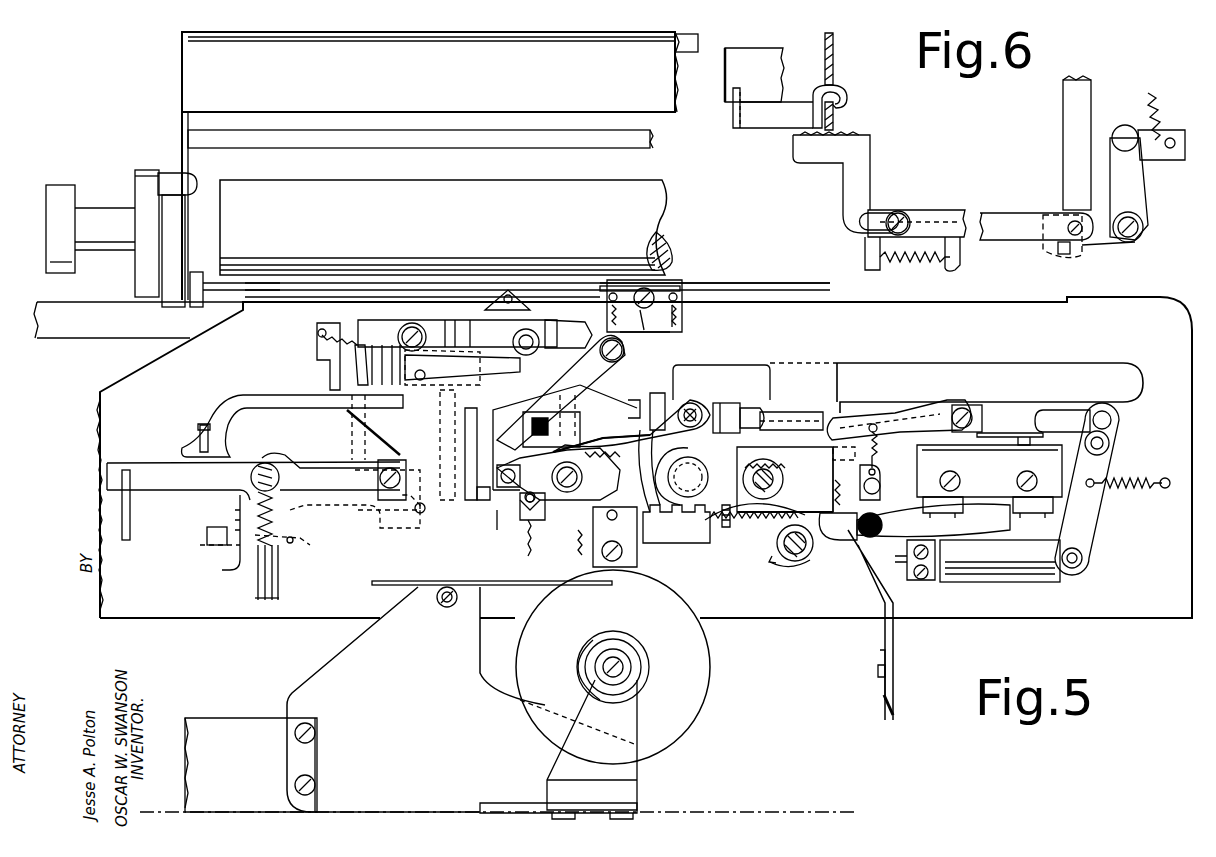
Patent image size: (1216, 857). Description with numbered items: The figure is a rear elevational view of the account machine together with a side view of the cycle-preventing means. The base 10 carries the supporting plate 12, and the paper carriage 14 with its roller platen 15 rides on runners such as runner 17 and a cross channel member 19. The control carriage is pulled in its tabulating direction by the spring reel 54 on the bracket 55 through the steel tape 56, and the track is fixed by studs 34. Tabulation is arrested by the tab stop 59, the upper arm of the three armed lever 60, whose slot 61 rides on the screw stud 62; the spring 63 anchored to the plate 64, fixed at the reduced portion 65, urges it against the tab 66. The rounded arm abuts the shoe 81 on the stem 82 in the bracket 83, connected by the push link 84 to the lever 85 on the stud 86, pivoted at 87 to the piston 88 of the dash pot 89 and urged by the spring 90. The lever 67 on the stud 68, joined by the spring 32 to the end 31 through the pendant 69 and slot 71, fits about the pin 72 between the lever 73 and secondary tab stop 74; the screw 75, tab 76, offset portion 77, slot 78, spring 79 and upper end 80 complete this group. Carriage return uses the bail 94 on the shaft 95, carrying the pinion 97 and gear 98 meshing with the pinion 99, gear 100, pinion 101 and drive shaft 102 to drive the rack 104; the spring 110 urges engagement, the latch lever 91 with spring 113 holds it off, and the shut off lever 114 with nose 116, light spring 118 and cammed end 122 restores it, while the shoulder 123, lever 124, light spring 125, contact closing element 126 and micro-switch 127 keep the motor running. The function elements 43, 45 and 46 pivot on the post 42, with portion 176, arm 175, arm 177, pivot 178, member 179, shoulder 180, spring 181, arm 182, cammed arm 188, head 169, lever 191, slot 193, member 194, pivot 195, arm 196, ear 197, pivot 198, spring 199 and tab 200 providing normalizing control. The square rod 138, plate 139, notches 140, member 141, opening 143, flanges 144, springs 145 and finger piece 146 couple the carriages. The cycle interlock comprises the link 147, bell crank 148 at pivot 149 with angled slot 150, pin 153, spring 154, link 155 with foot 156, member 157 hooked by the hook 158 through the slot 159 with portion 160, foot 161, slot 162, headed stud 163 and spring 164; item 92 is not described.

In FIG. 5, the base 10 is at (742, 810).
In FIG. 5, the supporting plate 12 is at (185, 614).
In FIG. 6, the supporting plate 12 is at (836, 74).
In FIG. 5, the paper carriage 14 is at (180, 97).
In FIG. 5, the roller platen 15 is at (460, 180).
In FIG. 5, the runner 17 is at (87, 340).
In FIG. 5, the cross channel member 19 is at (290, 305).
In FIG. 5, the end of lever 31 is at (275, 565).
In FIG. 5, the spring 32 is at (278, 477).
In FIG. 5, the studs 34 is at (446, 606).
In FIG. 5, the pivot post 42 is at (402, 336).
In FIG. 5, the paper feed bail 43 is at (337, 328).
In FIG. 5, the non-add bail 45 is at (479, 333).
In FIG. 5, the subtraction control element 46 is at (515, 340).
In FIG. 5, the spring reel 54 is at (697, 712).
In FIG. 5, the bracket 55 is at (637, 770).
In FIG. 5, the steel tape 56 is at (408, 580).
In FIG. 5, the tab stop 59 is at (584, 409).
In FIG. 5, the three armed lever 60 is at (612, 400).
In FIG. 5, the slot 61 is at (631, 426).
In FIG. 5, the screw stud 62 is at (660, 400).
In FIG. 5, the spring 63 is at (601, 437).
In FIG. 5, the plate 64 is at (608, 396).
In FIG. 5, the reduced portion of post 65 is at (533, 422).
In FIG. 5, the tab 66 is at (635, 398).
In FIG. 5, the lever 67 is at (315, 460).
In FIG. 5, the stud 68 is at (378, 478).
In FIG. 5, the pendant 69 is at (276, 510).
In FIG. 5, the open ended slot 71 is at (255, 600).
In FIG. 5, the pin 72 is at (493, 505).
In FIG. 5, the lever 73 is at (558, 482).
In FIG. 5, the secondary tab stop 74 is at (492, 440).
In FIG. 5, the screw 75 is at (590, 484).
In FIG. 5, the tab 76 is at (573, 480).
In FIG. 5, the offset portion 77 is at (644, 475).
In FIG. 5, the open ended slot 78 is at (512, 467).
In FIG. 5, the spring 79 is at (526, 545).
In FIG. 5, the upper end 80 is at (545, 395).
In FIG. 5, the shoe 81 is at (690, 403).
In FIG. 5, the stem 82 is at (760, 406).
In FIG. 5, the bracket 83 is at (738, 404).
In FIG. 5, the push link 84 is at (800, 405).
In FIG. 5, the lever 85 is at (1098, 510).
In FIG. 5, the stud 86 is at (1091, 472).
In FIG. 5, the pivotal connection 87 is at (1073, 568).
In FIG. 5, the piston 88 is at (1072, 548).
In FIG. 5, the dash pot 89 is at (1040, 540).
In FIG. 5, the spring 90 is at (1165, 476).
In FIG. 5, the latch lever 91 is at (607, 518).
In FIG. 5, the block 92 is at (593, 552).
In FIG. 6, the bail 94 is at (785, 58).
In FIG. 5, the shaft 95 is at (785, 499).
In FIG. 5, the carriage return pinion 97 is at (715, 478).
In FIG. 5, the pinion driving gear 98 is at (764, 473).
In FIG. 5, the pinion 99 is at (785, 479).
In FIG. 5, the gear 100 is at (745, 530).
In FIG. 5, the pinion 101 is at (784, 546).
In FIG. 5, the drive shaft 102 is at (786, 573).
In FIG. 5, the carriage return rack 104 is at (680, 543).
In FIG. 5, the spring 110 is at (724, 530).
In FIG. 5, the spring 113 is at (576, 532).
In FIG. 5, the shut off lever 114 is at (832, 410).
In FIG. 5, the nose 116 is at (822, 479).
In FIG. 5, the light spring 118 is at (861, 480).
In FIG. 5, the cammed end 122 is at (721, 382).
In FIG. 5, the shoulder 123 is at (832, 462).
In FIG. 5, the lever 124 is at (946, 405).
In FIG. 5, the light spring 125 is at (890, 453).
In FIG. 5, the contact closing element 126 is at (1025, 432).
In FIG. 5, the micro-switch 127 is at (989, 481).
In FIG. 5, the square rod 138 is at (218, 302).
In FIG. 5, the plate 139 is at (742, 282).
In FIG. 5, the notches 140 is at (715, 283).
In FIG. 5, the member 141 is at (637, 335).
In FIG. 5, the elongated opening 143 is at (652, 330).
In FIG. 5, the flanges 144 is at (683, 278).
In FIG. 5, the springs 145 is at (684, 318).
In FIG. 5, the finger piece 146 is at (193, 178).
In FIG. 6, the link 147 is at (1162, 162).
In FIG. 6, the bell crank 148 is at (1147, 200).
In FIG. 6, the pivot 149 is at (1135, 244).
In FIG. 6, the angled slot 150 is at (1064, 255).
In FIG. 6, the pin 153 is at (1085, 245).
In FIG. 6, the spring 154 is at (1147, 93).
In FIG. 5, the link 155 is at (883, 648).
In FIG. 6, the link 155 is at (1020, 212).
In FIG. 6, the foot 156 is at (865, 245).
In FIG. 5, the member 157 is at (884, 604).
In FIG. 6, the member 157 is at (874, 178).
In FIG. 6, the hook 158 is at (848, 100).
In FIG. 6, the slot 159 is at (820, 84).
In FIG. 5, the portion 160 is at (845, 532).
In FIG. 6, the portion 160 is at (740, 125).
In FIG. 6, the foot 161 is at (966, 252).
In FIG. 6, the elongated slot 162 is at (895, 210).
In FIG. 5, the headed stud 163 is at (878, 672).
In FIG. 6, the headed stud 163 is at (908, 215).
In FIG. 5, the spring 164 is at (893, 718).
In FIG. 6, the spring 164 is at (905, 262).
In FIG. 5, the enlarged head portion 169 is at (132, 528).
In FIG. 5, the upstanding arm 175 is at (360, 445).
In FIG. 5, the downwardly extending portion 176 is at (340, 372).
In FIG. 5, the downwardly extending arm 177 is at (457, 454).
In FIG. 5, the pivot 178 is at (423, 515).
In FIG. 5, the member 179 is at (358, 522).
In FIG. 5, the shoulder 180 is at (226, 527).
In FIG. 5, the spring 181 is at (298, 551).
In FIG. 5, the arm 182 is at (206, 536).
In FIG. 5, the cammed arm 188 is at (222, 558).
In FIG. 5, the lever 191 is at (198, 434).
In FIG. 5, the elongated slot 193 is at (206, 424).
In FIG. 5, the member 194 is at (256, 395).
In FIG. 5, the pivot 195 is at (622, 356).
In FIG. 5, the downwardly extending arm 196 is at (465, 450).
In FIG. 5, the ear 197 is at (490, 523).
In FIG. 5, the pivot 198 is at (377, 365).
In FIG. 5, the spring 199 is at (538, 320).
In FIG. 5, the tab 200 is at (462, 368).